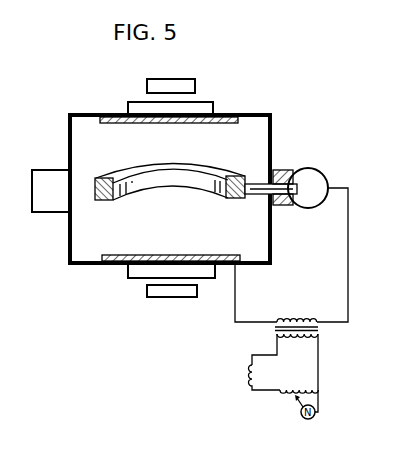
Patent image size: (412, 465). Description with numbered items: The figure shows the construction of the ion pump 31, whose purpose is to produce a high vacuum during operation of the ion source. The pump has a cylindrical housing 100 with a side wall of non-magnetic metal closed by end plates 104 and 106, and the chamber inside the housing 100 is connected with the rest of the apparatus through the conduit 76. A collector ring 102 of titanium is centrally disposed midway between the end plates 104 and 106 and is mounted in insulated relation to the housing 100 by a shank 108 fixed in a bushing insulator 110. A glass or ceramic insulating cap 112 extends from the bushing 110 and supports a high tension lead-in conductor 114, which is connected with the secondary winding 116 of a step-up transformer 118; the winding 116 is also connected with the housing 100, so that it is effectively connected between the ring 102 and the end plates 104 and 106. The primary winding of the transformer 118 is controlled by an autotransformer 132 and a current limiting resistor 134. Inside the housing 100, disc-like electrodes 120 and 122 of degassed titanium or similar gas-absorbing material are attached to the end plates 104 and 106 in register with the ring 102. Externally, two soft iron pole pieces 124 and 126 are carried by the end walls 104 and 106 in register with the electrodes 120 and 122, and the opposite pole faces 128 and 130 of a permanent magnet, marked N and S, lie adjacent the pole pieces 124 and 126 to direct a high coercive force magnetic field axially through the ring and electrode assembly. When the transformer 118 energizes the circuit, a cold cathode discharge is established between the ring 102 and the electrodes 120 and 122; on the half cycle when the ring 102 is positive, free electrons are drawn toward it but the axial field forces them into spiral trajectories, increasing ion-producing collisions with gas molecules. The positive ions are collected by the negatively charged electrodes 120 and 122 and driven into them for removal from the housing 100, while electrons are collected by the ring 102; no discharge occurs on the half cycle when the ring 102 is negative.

The ion pump 31 is at (63, 109).
The conduit 76 is at (46, 170).
The cylindrical housing 100 is at (273, 128).
The collector ring 102 is at (205, 165).
The end plate 104 is at (259, 112).
The end plate 106 is at (245, 266).
The shank 108 is at (256, 195).
The bushing insulator 110 is at (285, 170).
The insulating cap 112 is at (324, 176).
The high tension lead-in conductor 114 is at (349, 228).
The secondary winding 116 is at (295, 316).
The step-up transformer 118 is at (329, 332).
The disc-like electrode 120 is at (108, 115).
The disc-like electrode 122 is at (115, 255).
The pole piece 124 is at (213, 104).
The pole piece 126 is at (127, 276).
The pole face 128 is at (188, 86).
The pole face 130 is at (154, 298).
The autotransformer 132 is at (280, 386).
The current limiting resistor 134 is at (251, 372).
The north pole N is at (140, 104).
The south pole S is at (143, 275).